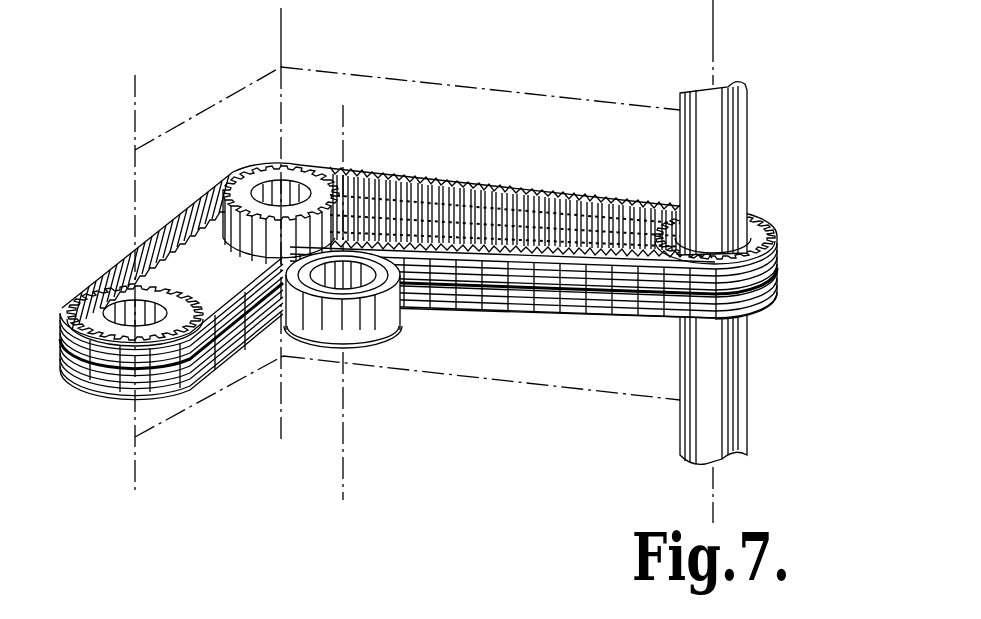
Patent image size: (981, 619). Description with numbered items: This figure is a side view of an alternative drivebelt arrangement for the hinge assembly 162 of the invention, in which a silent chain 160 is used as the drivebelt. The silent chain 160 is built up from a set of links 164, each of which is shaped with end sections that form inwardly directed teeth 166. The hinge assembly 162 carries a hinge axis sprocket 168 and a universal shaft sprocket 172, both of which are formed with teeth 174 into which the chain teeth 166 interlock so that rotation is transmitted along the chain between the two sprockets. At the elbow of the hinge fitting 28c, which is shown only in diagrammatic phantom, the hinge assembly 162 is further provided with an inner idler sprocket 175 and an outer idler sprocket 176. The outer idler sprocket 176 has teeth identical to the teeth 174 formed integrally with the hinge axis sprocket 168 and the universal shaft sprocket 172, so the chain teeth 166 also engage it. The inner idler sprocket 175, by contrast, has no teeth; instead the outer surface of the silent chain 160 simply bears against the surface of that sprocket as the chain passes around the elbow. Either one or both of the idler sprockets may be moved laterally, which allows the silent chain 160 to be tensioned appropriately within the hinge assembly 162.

The hinge fitting 28c is at (559, 134).
The silent chain 160 is at (542, 312).
The hinge assembly 162 is at (506, 79).
The links 164 is at (233, 365).
The teeth 166 is at (453, 183).
The hinge axis sprocket 168 is at (92, 292).
The universal shaft sprocket 172 is at (748, 222).
The teeth 174 is at (252, 176).
The inner idler sprocket 175 is at (392, 333).
The outer idler sprocket 176 is at (293, 180).